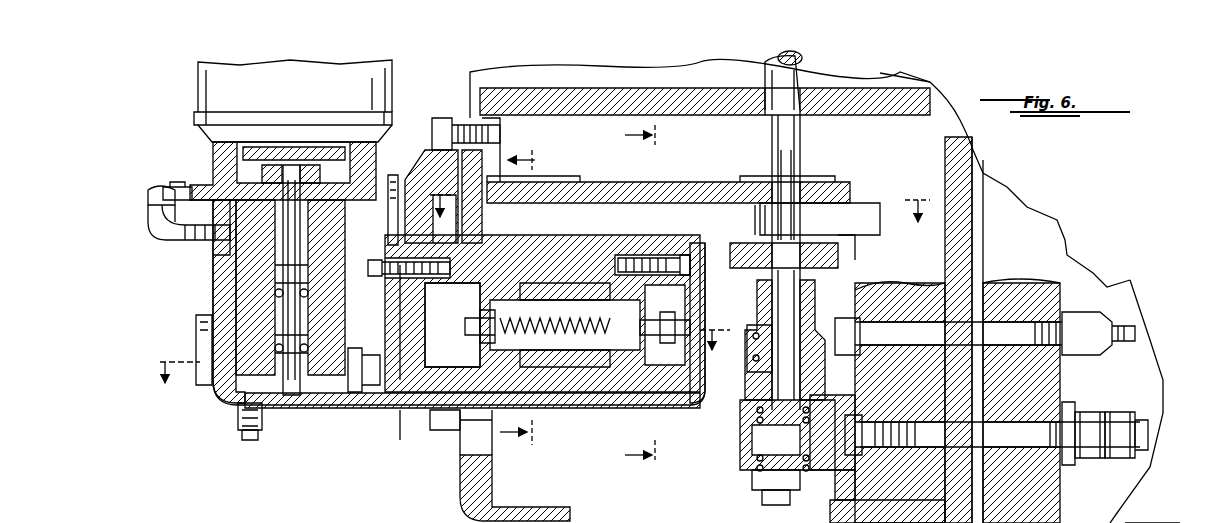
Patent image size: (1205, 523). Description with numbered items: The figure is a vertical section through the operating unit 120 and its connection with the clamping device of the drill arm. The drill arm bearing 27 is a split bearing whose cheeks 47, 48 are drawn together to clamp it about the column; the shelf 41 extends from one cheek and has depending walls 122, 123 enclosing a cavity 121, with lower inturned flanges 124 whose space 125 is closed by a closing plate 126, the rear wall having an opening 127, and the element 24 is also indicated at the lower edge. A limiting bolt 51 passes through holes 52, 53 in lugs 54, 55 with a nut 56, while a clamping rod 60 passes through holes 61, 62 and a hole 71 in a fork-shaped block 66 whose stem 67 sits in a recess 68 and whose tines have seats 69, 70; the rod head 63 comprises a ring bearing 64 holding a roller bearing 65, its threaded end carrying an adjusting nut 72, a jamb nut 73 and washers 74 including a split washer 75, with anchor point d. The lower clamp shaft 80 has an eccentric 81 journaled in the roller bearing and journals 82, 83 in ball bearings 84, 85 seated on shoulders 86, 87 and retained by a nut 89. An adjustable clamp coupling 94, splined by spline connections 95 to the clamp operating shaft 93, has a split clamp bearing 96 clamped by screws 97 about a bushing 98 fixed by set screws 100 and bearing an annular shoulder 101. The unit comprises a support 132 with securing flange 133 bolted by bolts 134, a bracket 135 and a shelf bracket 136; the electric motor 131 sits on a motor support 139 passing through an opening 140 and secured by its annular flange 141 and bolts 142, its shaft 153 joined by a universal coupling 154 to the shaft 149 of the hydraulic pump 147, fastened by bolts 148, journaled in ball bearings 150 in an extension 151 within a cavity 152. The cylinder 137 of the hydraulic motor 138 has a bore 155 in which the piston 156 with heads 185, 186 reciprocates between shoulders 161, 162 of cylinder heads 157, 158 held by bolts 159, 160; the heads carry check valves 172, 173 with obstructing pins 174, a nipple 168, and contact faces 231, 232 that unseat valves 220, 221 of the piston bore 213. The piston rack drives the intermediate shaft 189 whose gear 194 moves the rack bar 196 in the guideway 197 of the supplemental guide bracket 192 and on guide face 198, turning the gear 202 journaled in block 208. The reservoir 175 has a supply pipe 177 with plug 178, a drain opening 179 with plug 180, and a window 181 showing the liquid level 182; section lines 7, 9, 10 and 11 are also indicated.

The reversible electric motor 131 is at (205, 88).
The motor support 139 is at (208, 178).
The universal coupling 154 is at (272, 183).
The shaft of the electric motor 153 is at (305, 183).
The annular flange 141 is at (178, 186).
The plug 178 is at (150, 198).
The liquid supply pipe 177 is at (160, 222).
The opening 140 is at (200, 258).
The bracket 135 is at (213, 262).
The hydraulic pump 147 is at (292, 410).
The bolts 148 is at (333, 410).
The liquid reservoir 175 is at (320, 412).
The cylinder head 157 is at (384, 410).
The check valve 172 is at (397, 434).
The drain opening 179 is at (240, 422).
The plug 180 is at (250, 441).
The unit 120 is at (212, 400).
The ball bearings 150 is at (275, 293).
The cavity 152 is at (275, 305).
The dotted line 182 is at (210, 335).
The window 181 is at (205, 348).
The section line 7 is at (444, 368).
The securing flange 133 is at (442, 118).
The bolts 134 is at (432, 127).
The support 132 is at (418, 165).
The bolts 142 is at (392, 200).
The shelf bracket 136 is at (472, 200).
The section line 9 is at (680, 220).
The section line 10 is at (515, 294).
The section line 11 is at (628, 295).
The cavity 121 is at (660, 116).
The shelf 41 is at (905, 100).
The cheek 47 is at (920, 140).
The depending wall 123 is at (978, 152).
The lug 54 is at (982, 172).
The lug 55 is at (1010, 222).
The cheek 48 is at (1083, 273).
The bearing 27 is at (1130, 350).
The base 24 is at (1080, 522).
The hole 52 is at (920, 295).
The limiting bolt 51 is at (1000, 283).
The hole 53 is at (1028, 283).
The adjustable clamp coupling 94 is at (845, 300).
The nut 56 is at (1070, 315).
The hole 62 is at (990, 449).
The hole 61 is at (935, 453).
The recess 68 is at (900, 453).
The stem 67 is at (865, 455).
The hole 71 is at (850, 455).
The split washer 75 is at (1070, 402).
The adjusting nut 72 is at (1088, 412).
The jamb nut 73 is at (1118, 416).
The washers 74 is at (1080, 450).
The anchor point d is at (1090, 437).
The clamping rod 60 is at (1035, 450).
The clamp operating shaft 93 is at (802, 60).
The spline connections 95 is at (795, 275).
The supplemental guide bracket 192 is at (690, 182).
The gear 202 is at (812, 182).
The rack bar 196 is at (850, 212).
The block 208 is at (840, 258).
The bushing 98 is at (818, 310).
The annular shoulder 101 is at (848, 336).
The split clamp bearing 96 is at (748, 350).
The screws 97 is at (752, 372).
The set screws 100 is at (756, 390).
The shoulder 86 is at (787, 435).
The roller bearing 65 is at (792, 437).
The journal 83 is at (756, 410).
The ball bearings 85 is at (750, 418).
The head 63 is at (745, 432).
The ring bearing 64 is at (748, 445).
The eccentric 81 is at (752, 460).
The ball bearings 84 is at (760, 470).
The journal 82 is at (762, 478).
The nut 89 is at (770, 490).
The lower clamp shaft 80 is at (780, 505).
The shoulder 87 is at (786, 490).
The seat 69 is at (825, 505).
The block 66 is at (825, 470).
The seat 70 is at (818, 400).
The shaft of the rotor of the pump 149 is at (348, 302).
The extension of the pump casing 151 is at (348, 312).
The bolts 159 is at (399, 262).
The nipple 168 is at (365, 380).
The shoulder 161 is at (427, 305).
The central contact face 231 is at (427, 318).
The obstructing pins 174 is at (427, 348).
The piston head 185 is at (520, 300).
The bore 213 is at (555, 283).
The piston head 186 is at (600, 283).
The guide face 198 is at (640, 258).
The cylinder head 158 is at (662, 258).
The bolts 160 is at (690, 260).
The intermediate shaft 189 is at (548, 283).
The gear 194 is at (570, 283).
The guideway 197 is at (606, 203).
The shoulder 162 is at (690, 308).
The central contact face 232 is at (690, 320).
The bore 155 is at (440, 375).
The piston 156 is at (588, 372).
The valve 221 is at (635, 408).
The check valve 173 is at (668, 408).
The cylinder 137 is at (540, 410).
The valve 220 is at (476, 432).
The hydraulic motor 138 is at (445, 428).
The rear wall 122 is at (490, 487).
The opening 127 is at (490, 450).
The inturned flanges 124 is at (550, 518).
The space 125 is at (580, 522).
The closing plate 126 is at (625, 522).